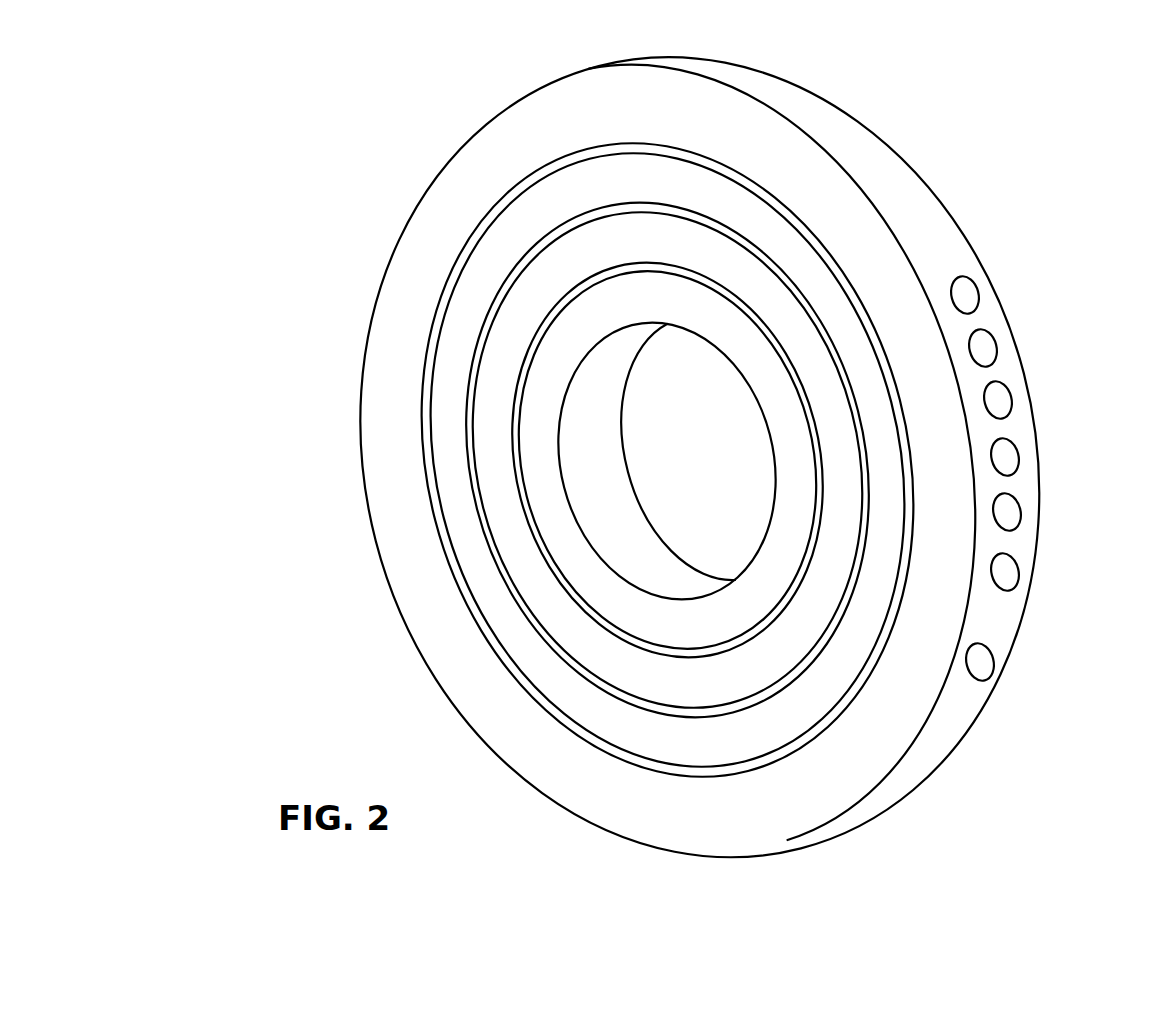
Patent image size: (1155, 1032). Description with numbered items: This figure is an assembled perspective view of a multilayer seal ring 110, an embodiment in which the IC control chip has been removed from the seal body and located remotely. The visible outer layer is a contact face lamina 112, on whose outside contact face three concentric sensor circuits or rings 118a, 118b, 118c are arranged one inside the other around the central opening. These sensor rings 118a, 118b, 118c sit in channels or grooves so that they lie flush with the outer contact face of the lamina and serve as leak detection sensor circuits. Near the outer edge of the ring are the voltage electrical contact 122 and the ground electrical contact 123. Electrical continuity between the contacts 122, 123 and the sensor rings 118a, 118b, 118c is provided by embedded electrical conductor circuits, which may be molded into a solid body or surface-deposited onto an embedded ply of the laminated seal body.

The seal ring 110 is at (278, 571).
The contact face lamina 112 is at (793, 803).
The sensor circuit ring 118a is at (578, 290).
The sensor circuit ring 118b is at (492, 303).
The sensor circuit ring 118c is at (428, 409).
The voltage electrical contact 122 is at (1000, 398).
The ground electrical contact 123 is at (985, 662).